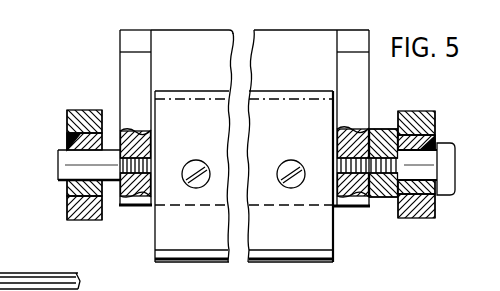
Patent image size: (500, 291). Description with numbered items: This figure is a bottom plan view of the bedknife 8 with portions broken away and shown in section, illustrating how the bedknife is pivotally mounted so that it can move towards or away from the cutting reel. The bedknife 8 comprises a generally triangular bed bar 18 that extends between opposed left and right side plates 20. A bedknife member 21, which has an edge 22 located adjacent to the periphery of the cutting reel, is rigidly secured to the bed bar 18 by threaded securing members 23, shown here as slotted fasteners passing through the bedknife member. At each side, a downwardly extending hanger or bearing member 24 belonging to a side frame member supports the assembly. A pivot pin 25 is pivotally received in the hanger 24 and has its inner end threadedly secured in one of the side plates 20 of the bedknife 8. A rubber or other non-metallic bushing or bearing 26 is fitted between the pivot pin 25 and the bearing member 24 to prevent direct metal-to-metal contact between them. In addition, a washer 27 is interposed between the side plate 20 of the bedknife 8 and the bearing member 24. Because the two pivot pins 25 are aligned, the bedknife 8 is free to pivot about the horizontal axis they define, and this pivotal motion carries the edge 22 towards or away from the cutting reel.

The bedknife 8 is at (243, 31).
The bed bar 18 is at (298, 35).
The side plate 20 is at (123, 63).
The bedknife member 21 is at (204, 139).
The edge 22 is at (197, 261).
The threaded securing member 23 is at (194, 189).
The hanger or bearing member 24 is at (77, 110).
The pivot pin 25 is at (65, 173).
The bushing or bearing 26 is at (68, 144).
The washer 27 is at (384, 198).